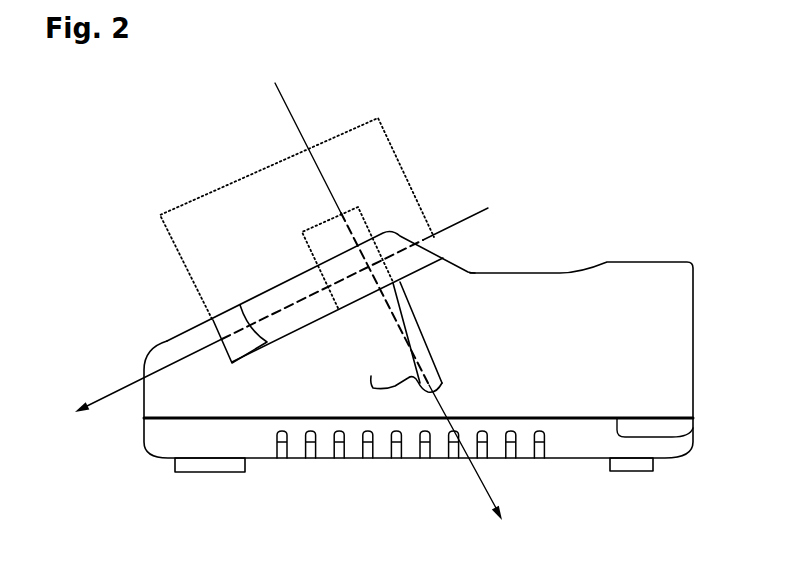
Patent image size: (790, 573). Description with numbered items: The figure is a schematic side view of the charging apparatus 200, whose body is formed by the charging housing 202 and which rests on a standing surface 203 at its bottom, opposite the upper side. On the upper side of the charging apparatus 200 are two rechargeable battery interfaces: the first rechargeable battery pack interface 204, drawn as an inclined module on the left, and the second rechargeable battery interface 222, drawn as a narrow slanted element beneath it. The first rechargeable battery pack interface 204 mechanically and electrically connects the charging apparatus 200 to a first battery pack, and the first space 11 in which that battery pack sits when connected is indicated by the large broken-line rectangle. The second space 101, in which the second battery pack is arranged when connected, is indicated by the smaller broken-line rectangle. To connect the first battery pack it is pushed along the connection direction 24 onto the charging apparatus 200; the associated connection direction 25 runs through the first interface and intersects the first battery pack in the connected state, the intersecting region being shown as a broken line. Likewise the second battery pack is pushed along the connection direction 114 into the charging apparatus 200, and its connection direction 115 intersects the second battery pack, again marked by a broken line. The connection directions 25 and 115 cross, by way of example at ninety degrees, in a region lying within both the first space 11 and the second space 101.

The first space 11 is at (185, 200).
The second space 101 is at (312, 223).
The charging apparatus 200 is at (547, 223).
The charging housing 202 is at (643, 283).
The foot 203 is at (268, 470).
The first rechargeable battery pack interface 204 is at (250, 276).
The second rechargeable battery interface 222 is at (386, 347).
The connection direction 24 is at (280, 310).
The connection direction 25 is at (107, 395).
The connection direction 114 is at (459, 302).
The connection direction 115 is at (483, 484).